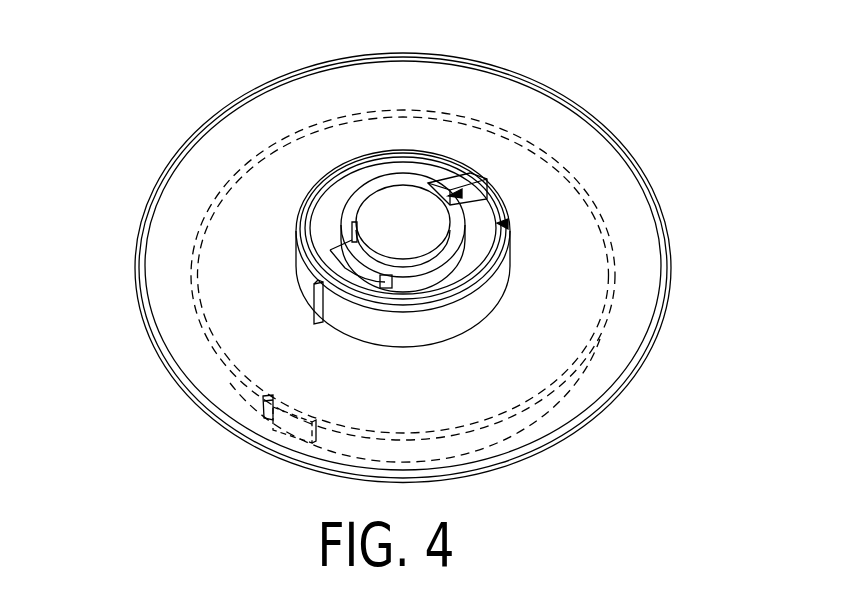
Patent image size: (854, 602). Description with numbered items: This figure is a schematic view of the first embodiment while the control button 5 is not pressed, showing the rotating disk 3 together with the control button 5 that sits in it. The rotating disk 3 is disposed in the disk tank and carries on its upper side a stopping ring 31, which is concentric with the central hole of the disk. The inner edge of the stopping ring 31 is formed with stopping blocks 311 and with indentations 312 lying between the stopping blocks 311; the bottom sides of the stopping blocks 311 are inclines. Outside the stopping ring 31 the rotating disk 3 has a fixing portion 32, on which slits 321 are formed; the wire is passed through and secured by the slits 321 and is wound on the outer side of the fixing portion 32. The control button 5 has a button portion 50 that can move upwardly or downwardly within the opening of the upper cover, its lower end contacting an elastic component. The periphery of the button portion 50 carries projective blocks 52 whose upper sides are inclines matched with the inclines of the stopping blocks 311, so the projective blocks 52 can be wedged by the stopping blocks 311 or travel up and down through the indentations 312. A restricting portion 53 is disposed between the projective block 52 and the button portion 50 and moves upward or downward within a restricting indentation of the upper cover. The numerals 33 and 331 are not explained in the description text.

The rotating disk 3 is at (660, 240).
The annular groove 33 is at (583, 367).
The positioning tabs 331 is at (262, 415).
The control button 5 is at (482, 182).
The stopping ring 31 is at (513, 220).
The stopping blocks 311 is at (330, 250).
The indentations 312 is at (437, 188).
The fixing portion 32 is at (355, 327).
The slits 321 is at (314, 305).
The button portion 50 is at (395, 205).
The projective blocks 52 is at (350, 222).
The restricting portion 53 is at (380, 288).